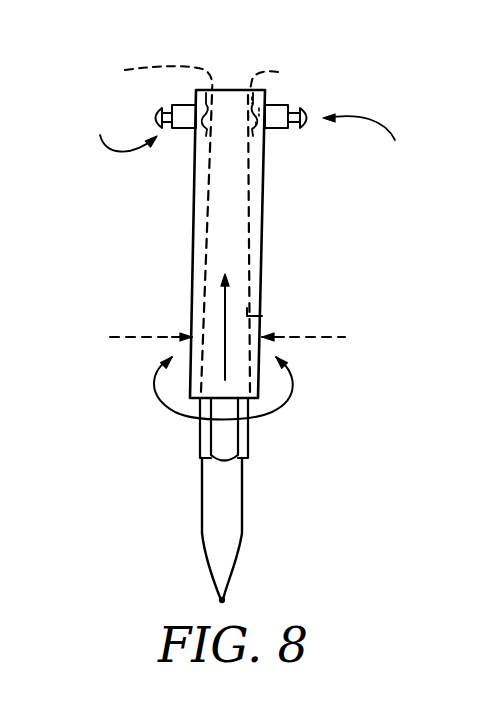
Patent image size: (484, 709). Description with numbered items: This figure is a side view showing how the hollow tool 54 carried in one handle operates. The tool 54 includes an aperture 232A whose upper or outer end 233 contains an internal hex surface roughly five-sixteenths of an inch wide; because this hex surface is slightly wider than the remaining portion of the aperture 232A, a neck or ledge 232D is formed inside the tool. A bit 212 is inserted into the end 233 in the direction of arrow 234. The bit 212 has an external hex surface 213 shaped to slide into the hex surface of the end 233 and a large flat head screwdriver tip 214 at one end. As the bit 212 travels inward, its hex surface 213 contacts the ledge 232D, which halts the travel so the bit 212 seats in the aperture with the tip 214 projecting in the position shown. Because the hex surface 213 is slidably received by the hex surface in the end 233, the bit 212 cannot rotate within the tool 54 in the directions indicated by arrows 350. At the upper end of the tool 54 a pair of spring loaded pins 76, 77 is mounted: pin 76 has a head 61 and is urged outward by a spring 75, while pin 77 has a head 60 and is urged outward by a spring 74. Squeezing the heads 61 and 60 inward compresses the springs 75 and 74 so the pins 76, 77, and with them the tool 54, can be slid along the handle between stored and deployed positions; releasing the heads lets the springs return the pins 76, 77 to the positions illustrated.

The hollow tool 54 is at (270, 168).
The head 60 is at (153, 108).
The head 61 is at (305, 112).
The spring 74 is at (153, 75).
The spring 75 is at (280, 76).
The spring loaded pin 76 is at (374, 139).
The spring loaded pin 77 is at (126, 132).
The aperture 232A is at (278, 190).
The neck or ledge 232D is at (203, 306).
The upper or outer end 233 is at (253, 316).
The arrow 234 is at (226, 296).
The arrows 350 is at (288, 408).
The external hex surface 213 is at (206, 445).
The bit 212 is at (275, 540).
The large flat head screwdriver tip 214 is at (220, 597).